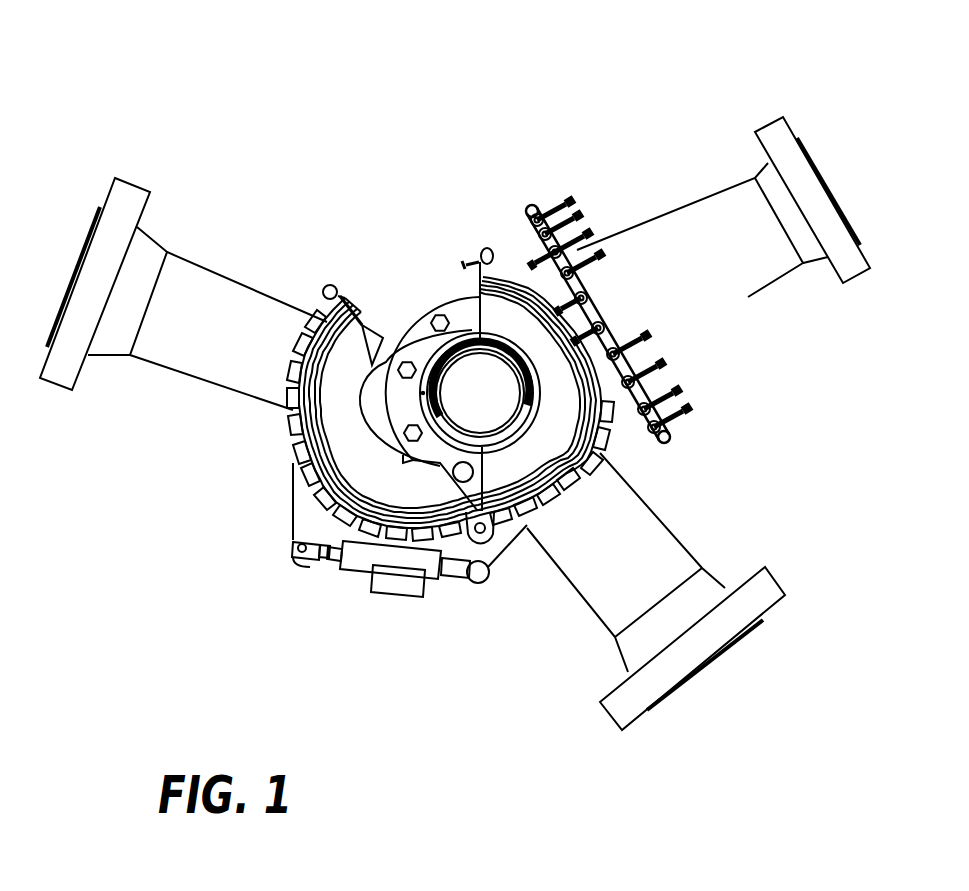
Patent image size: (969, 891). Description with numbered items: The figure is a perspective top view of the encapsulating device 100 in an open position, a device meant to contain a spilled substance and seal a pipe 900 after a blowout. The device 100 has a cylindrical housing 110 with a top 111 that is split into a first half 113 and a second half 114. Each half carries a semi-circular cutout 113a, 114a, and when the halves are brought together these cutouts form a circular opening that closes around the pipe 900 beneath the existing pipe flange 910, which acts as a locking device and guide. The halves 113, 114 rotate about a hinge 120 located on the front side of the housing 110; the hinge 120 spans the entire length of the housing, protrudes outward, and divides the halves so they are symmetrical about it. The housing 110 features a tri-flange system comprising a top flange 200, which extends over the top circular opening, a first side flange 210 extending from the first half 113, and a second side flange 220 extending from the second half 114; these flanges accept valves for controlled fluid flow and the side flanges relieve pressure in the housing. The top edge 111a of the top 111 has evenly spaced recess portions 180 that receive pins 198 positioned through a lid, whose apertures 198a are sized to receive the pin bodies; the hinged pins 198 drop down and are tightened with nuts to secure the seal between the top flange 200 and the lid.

The encapsulating device 100 is at (262, 97).
The housing 110 is at (503, 322).
The top 111 is at (598, 341).
The top edge 111a is at (468, 505).
The first half 113 is at (333, 520).
The semi-circular cutout 113a is at (350, 393).
The second half 114 is at (612, 445).
The semi-circular cutout 114a is at (518, 443).
The hinge 120 is at (490, 540).
The recess portions 180 is at (305, 345).
The pins 198 is at (700, 400).
The apertures 198a is at (705, 412).
The top flange 200 is at (763, 117).
The first side flange 210 is at (122, 207).
The second side flange 220 is at (693, 647).
The pipe 900 is at (510, 409).
The pipe flange 910 is at (432, 302).